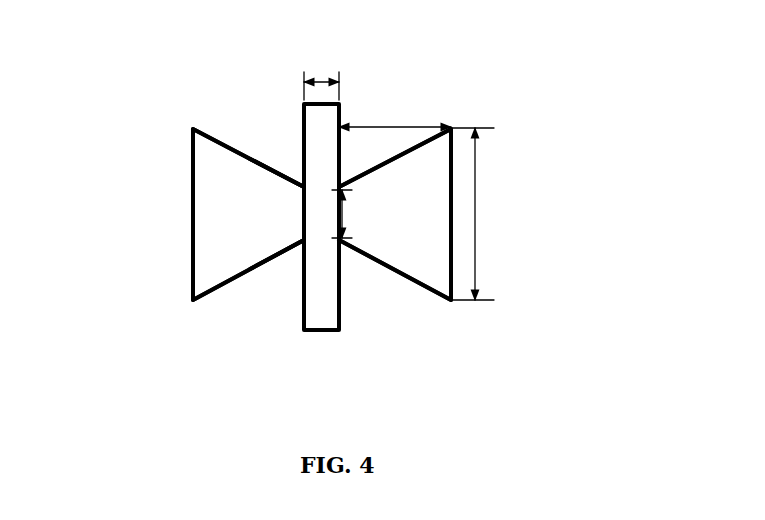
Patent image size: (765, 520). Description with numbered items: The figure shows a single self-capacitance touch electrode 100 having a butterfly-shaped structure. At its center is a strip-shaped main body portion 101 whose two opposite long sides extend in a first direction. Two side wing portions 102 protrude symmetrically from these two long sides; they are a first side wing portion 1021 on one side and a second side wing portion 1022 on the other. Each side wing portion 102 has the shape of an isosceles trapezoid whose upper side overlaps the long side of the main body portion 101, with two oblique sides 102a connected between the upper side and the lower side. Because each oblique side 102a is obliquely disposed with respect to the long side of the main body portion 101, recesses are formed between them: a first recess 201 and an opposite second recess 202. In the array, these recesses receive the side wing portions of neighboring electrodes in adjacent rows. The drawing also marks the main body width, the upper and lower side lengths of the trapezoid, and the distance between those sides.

The self-capacitance touch electrode 100 is at (219, 80).
The main body portion 101 is at (320, 290).
The side wing portion 102 is at (200, 246).
The first side wing portion 1021 is at (207, 203).
The second side wing portion 1022 is at (440, 213).
The oblique side 102a is at (252, 158).
The first recess 201 is at (273, 150).
The second recess 202 is at (285, 268).